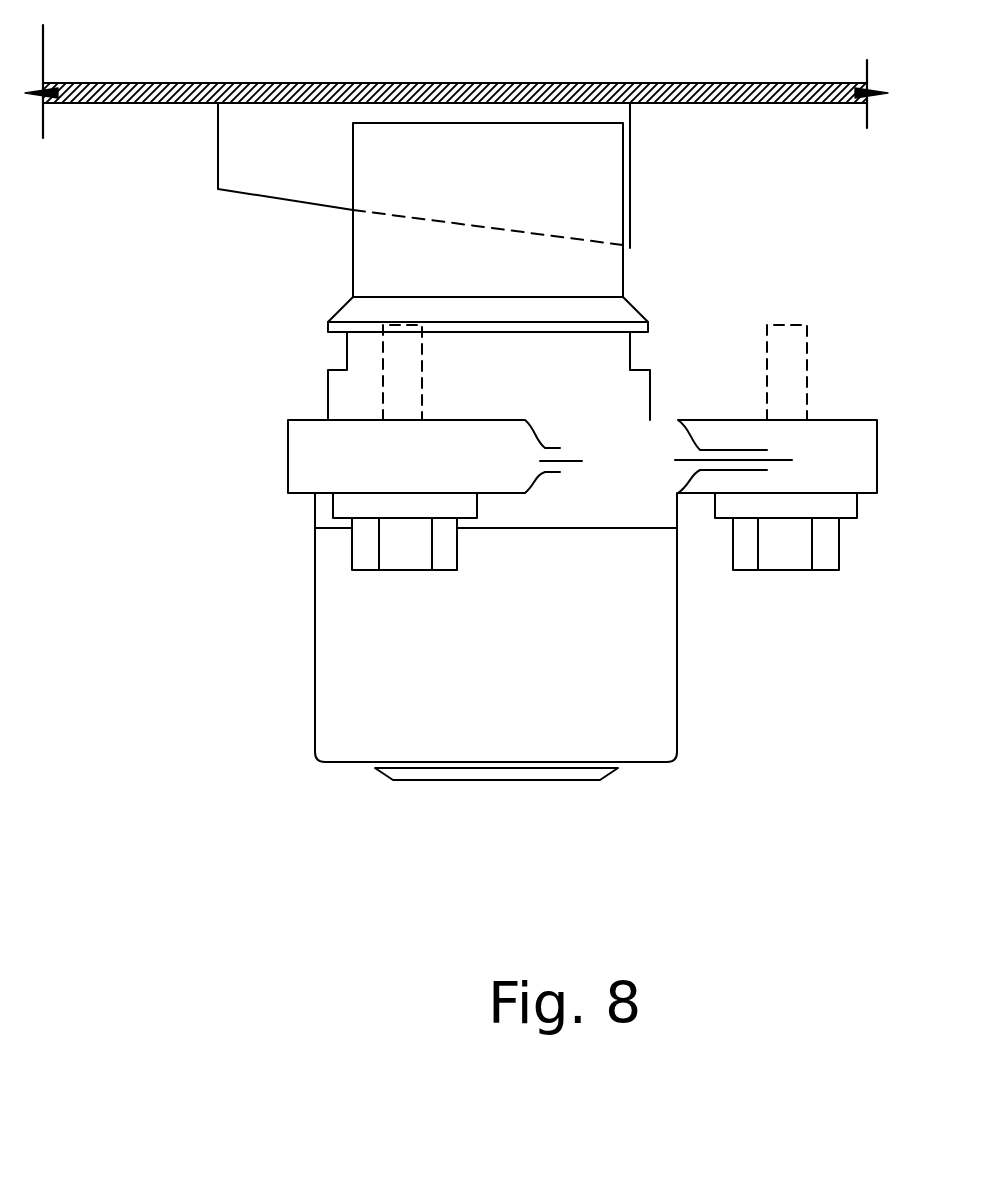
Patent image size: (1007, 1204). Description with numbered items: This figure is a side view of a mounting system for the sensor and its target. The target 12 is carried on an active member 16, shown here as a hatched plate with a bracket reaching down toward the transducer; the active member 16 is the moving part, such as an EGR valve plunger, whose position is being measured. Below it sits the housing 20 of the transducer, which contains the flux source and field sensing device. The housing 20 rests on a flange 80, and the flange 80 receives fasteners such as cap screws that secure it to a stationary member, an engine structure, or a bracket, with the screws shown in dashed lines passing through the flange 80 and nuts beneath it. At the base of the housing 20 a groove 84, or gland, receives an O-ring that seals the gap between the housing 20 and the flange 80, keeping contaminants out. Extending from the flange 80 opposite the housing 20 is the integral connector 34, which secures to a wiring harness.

The target 12 is at (252, 172).
The active member 16 is at (753, 90).
The housing 20 is at (383, 262).
The integral connector 34 is at (478, 757).
The flange 80 is at (670, 520).
The groove 84 is at (630, 348).